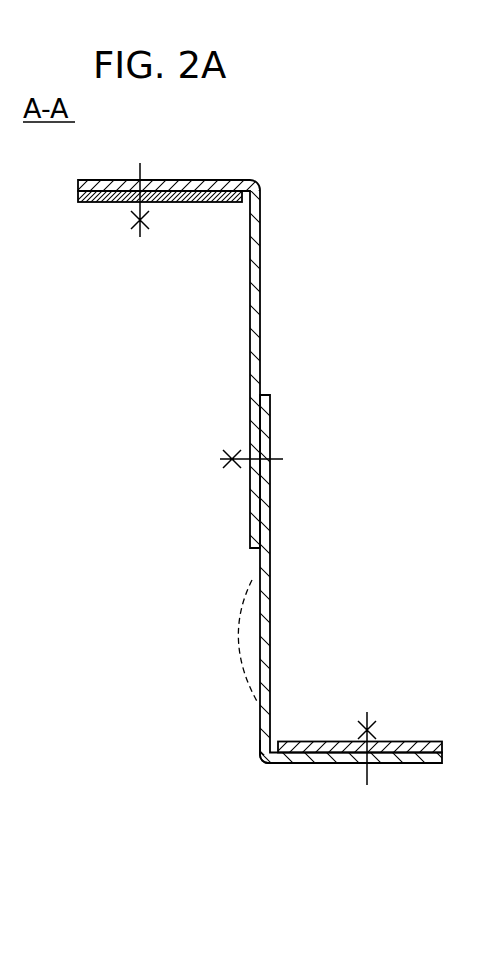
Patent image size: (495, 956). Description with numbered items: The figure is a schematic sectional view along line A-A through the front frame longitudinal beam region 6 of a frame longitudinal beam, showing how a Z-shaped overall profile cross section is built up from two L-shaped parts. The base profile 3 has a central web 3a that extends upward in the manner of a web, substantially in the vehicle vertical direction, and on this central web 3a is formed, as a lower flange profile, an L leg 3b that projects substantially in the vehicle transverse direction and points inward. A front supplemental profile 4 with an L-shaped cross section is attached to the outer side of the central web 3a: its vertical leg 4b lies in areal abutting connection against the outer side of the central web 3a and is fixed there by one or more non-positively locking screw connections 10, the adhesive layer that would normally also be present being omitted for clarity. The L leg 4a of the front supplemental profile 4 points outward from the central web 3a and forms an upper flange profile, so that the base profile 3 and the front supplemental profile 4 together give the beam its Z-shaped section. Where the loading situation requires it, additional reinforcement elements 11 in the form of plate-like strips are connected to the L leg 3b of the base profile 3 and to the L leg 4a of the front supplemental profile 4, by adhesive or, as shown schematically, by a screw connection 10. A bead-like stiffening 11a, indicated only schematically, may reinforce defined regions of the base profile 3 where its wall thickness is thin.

The base profile 3 is at (280, 665).
The central web 3a is at (258, 733).
The L leg 3b is at (313, 767).
The front supplemental profile 4 is at (233, 332).
The L leg 4a is at (190, 180).
The vertical leg 4b is at (262, 296).
The front frame longitudinal beam region 6 is at (160, 488).
The screw connection 10 is at (142, 230).
The reinforcement element 11 is at (397, 741).
The bead-like stiffening 11a is at (238, 628).